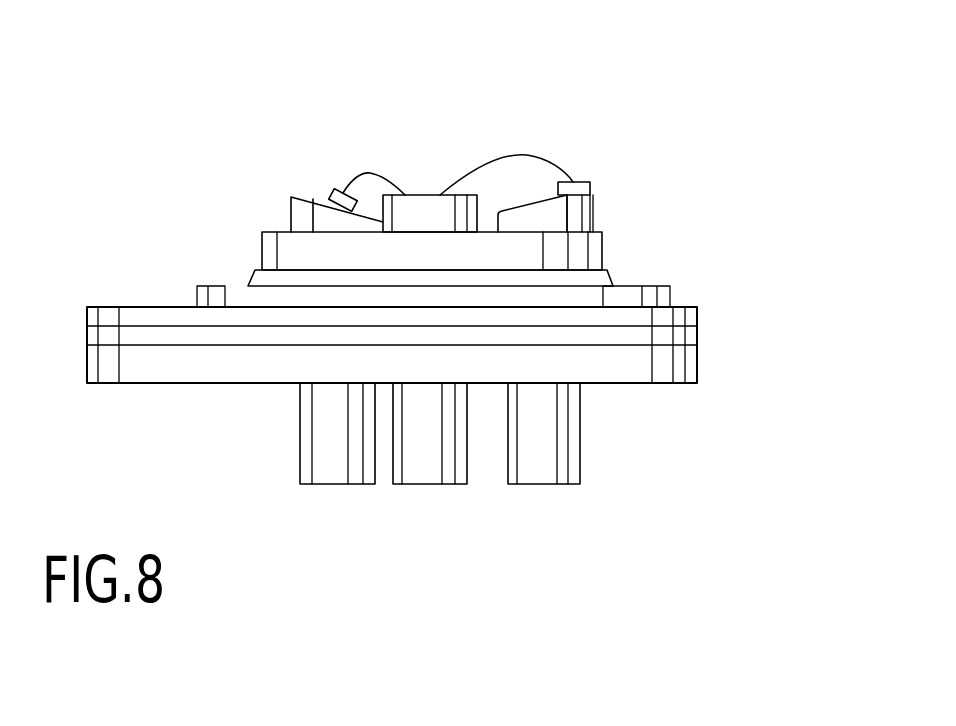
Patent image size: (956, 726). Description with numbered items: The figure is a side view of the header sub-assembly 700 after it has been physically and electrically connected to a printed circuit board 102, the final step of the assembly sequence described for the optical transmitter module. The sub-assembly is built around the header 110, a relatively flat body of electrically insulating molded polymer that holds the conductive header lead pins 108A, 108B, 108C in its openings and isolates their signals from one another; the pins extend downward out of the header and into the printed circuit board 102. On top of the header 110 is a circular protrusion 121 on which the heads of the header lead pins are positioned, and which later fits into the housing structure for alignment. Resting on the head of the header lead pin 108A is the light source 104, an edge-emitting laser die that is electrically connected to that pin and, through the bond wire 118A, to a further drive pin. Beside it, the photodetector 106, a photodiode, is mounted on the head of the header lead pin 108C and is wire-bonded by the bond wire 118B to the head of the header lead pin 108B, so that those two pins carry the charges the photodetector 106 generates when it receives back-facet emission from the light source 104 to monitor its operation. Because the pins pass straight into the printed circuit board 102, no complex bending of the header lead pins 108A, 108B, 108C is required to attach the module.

The header sub-assembly 700 is at (733, 70).
The printed circuit board 102 is at (697, 360).
The header 110 is at (603, 243).
The circular protrusion 121 is at (248, 234).
The photodetector 106 is at (340, 189).
The bond wire 118B is at (385, 175).
The bond wire 118A is at (514, 157).
The light source 104 is at (590, 181).
The header lead pin 108C is at (333, 485).
The header lead pin 108B is at (433, 485).
The header lead pin 108A is at (547, 485).